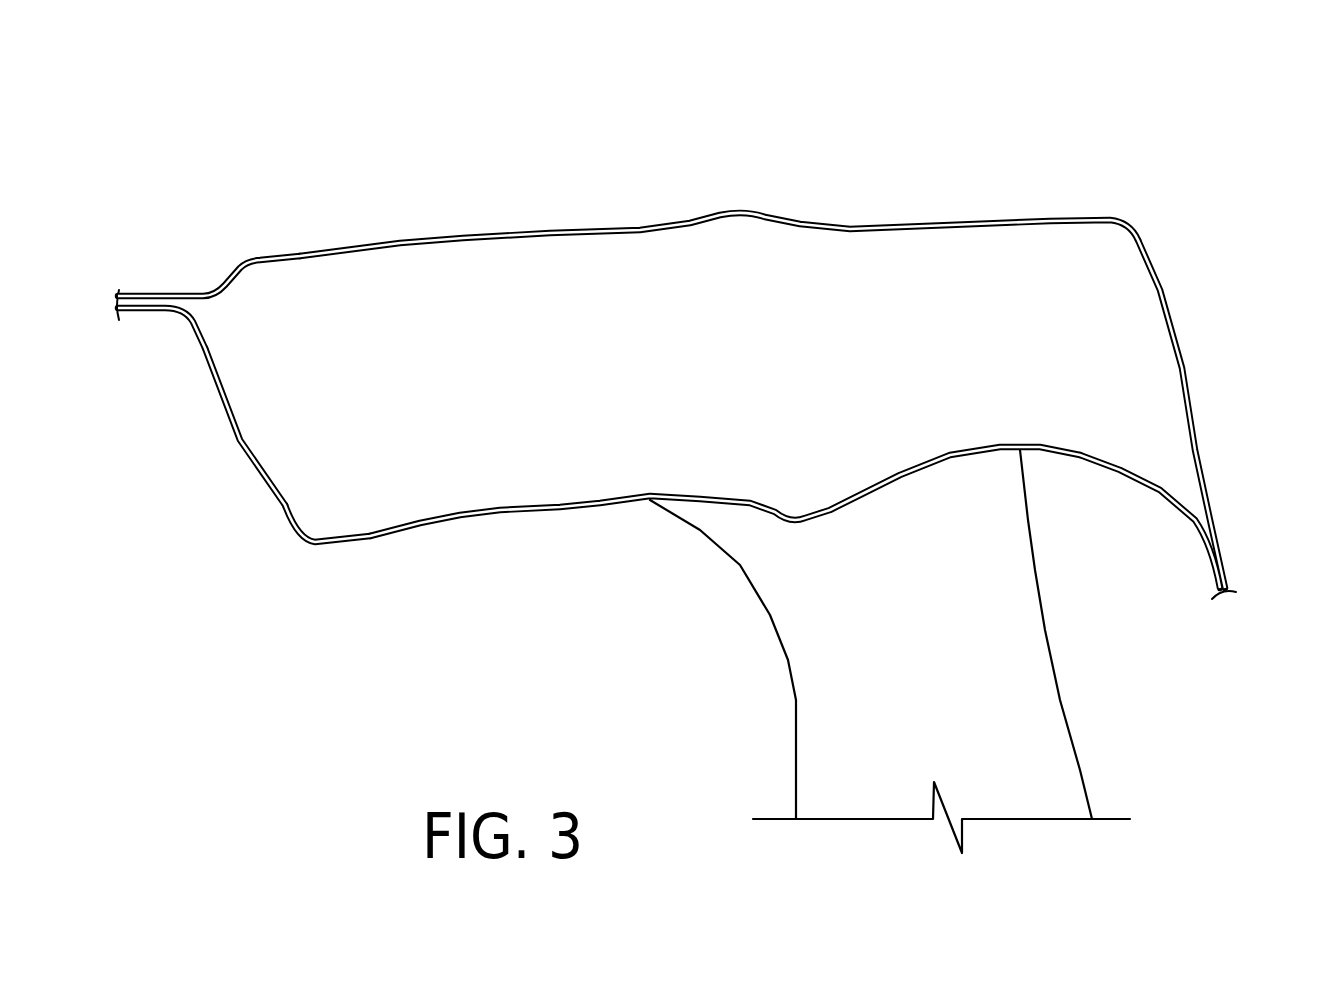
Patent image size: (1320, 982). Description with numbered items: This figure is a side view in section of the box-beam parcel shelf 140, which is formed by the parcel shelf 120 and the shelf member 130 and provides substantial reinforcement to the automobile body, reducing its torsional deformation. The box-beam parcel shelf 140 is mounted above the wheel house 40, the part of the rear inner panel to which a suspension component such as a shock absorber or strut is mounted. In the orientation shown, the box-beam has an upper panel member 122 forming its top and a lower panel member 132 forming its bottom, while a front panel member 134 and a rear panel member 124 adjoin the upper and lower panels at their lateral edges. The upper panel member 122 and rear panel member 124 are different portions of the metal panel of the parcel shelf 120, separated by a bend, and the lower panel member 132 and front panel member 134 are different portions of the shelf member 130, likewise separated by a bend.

The wheel house 40 is at (1115, 697).
The parcel shelf 120 is at (958, 185).
The upper panel member 122 is at (463, 238).
The rear panel member 124 is at (1183, 367).
The shelf member 130 is at (290, 572).
The lower panel member 132 is at (582, 510).
The front panel member 134 is at (230, 425).
The box-beam parcel shelf 140 is at (233, 215).